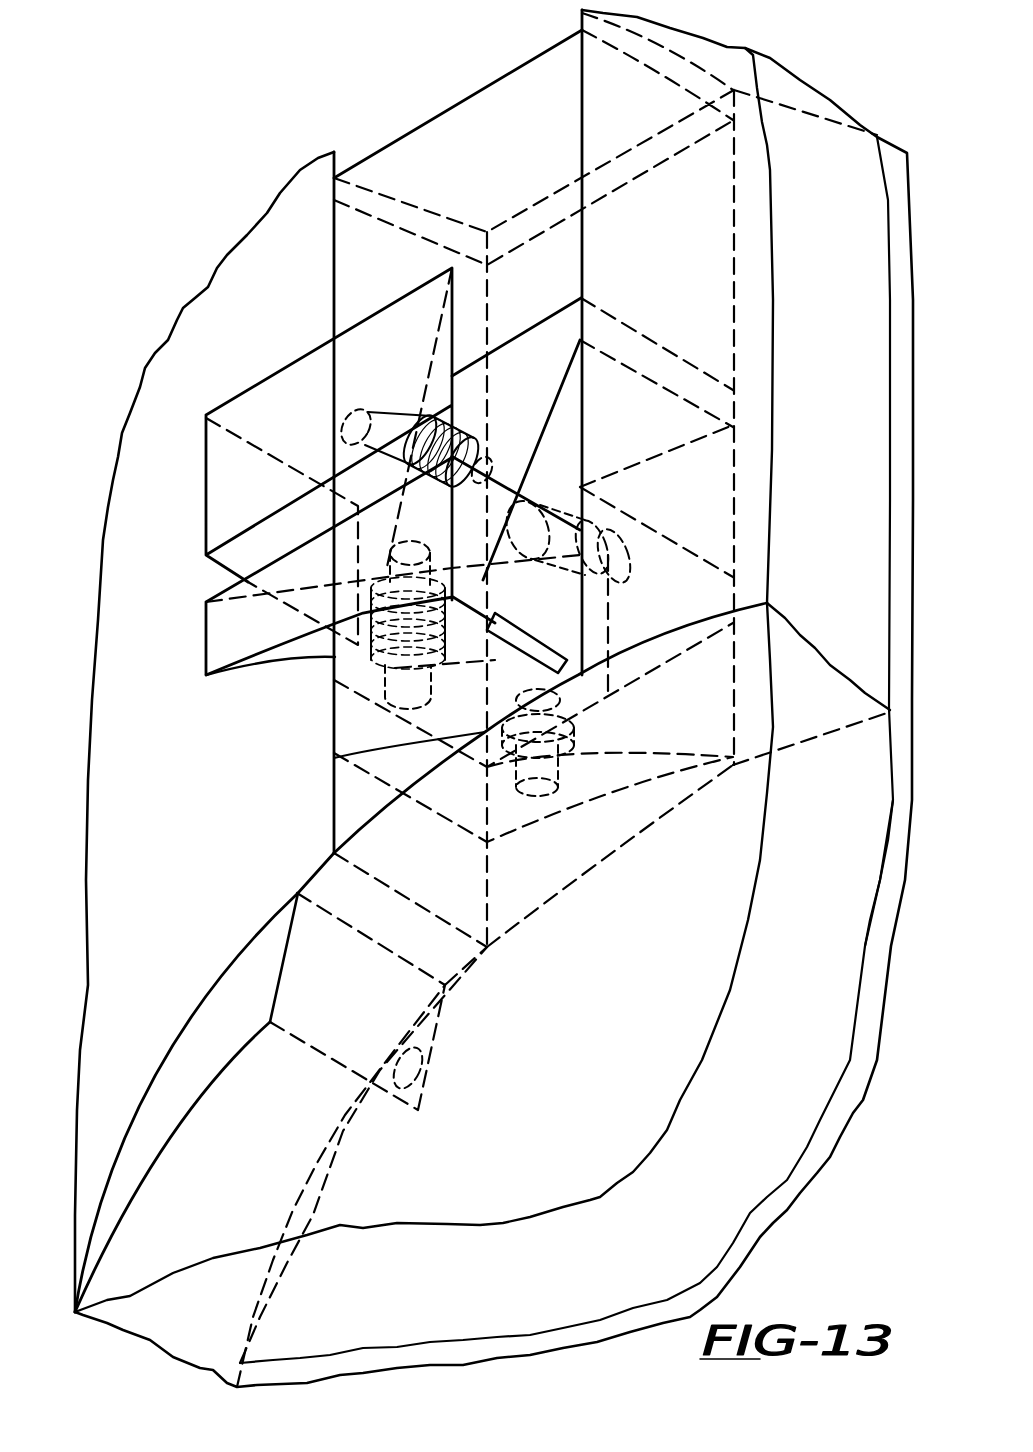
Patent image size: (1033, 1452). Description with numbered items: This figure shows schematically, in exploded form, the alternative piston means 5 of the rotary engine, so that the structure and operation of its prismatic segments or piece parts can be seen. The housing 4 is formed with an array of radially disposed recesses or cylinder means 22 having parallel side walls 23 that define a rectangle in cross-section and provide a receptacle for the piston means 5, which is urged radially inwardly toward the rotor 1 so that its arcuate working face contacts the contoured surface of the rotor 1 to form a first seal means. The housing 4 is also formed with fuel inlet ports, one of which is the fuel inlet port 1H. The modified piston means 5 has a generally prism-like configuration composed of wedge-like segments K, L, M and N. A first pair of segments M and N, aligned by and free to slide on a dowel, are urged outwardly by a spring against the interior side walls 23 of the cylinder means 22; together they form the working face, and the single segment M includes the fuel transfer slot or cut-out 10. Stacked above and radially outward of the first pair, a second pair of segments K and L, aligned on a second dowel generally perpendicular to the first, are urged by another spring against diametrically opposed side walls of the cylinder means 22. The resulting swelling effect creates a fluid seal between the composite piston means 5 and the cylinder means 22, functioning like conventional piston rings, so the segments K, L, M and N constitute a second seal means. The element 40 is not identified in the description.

The rotor 1 is at (594, 1030).
The fuel inlet port 1H is at (422, 1079).
The housing 4 is at (840, 556).
The piston means 5 is at (518, 164).
The fuel transfer slot 10 is at (535, 640).
The cylinder means 22 is at (445, 108).
The side walls 23 is at (333, 161).
The rock surface layer 40 is at (890, 878).
The segment K is at (276, 372).
The segment L is at (556, 400).
The segment M is at (256, 670).
The segment N is at (334, 760).